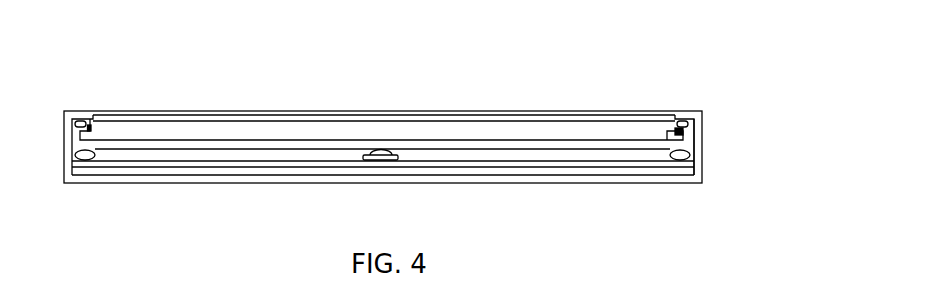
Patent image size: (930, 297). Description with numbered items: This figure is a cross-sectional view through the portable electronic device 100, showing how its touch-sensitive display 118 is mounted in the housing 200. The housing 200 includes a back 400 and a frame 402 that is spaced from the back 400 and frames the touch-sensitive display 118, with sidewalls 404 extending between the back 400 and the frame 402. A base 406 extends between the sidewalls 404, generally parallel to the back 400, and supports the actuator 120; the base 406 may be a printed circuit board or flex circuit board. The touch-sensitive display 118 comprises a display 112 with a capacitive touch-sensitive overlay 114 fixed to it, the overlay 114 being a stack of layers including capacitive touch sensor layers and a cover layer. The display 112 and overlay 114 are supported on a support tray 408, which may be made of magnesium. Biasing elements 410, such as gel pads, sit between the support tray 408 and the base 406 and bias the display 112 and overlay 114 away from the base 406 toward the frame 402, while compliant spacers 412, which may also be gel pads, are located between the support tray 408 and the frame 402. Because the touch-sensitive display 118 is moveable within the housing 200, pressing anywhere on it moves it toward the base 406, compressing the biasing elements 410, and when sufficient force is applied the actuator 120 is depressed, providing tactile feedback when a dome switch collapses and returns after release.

The portable electronic device 100 is at (582, 58).
The housing 200 is at (77, 183).
The sidewalls 404 is at (701, 153).
The back 400 is at (437, 179).
The base 406 is at (246, 161).
The touch-sensitive display 118 is at (160, 112).
The capacitive touch-sensitive overlay 114 is at (362, 118).
The display 112 is at (305, 130).
The frame 402 is at (84, 113).
The compliant spacers 412 is at (684, 120).
The support tray 408 is at (686, 134).
The biasing elements 410 is at (683, 152).
The actuator 120 is at (381, 155).